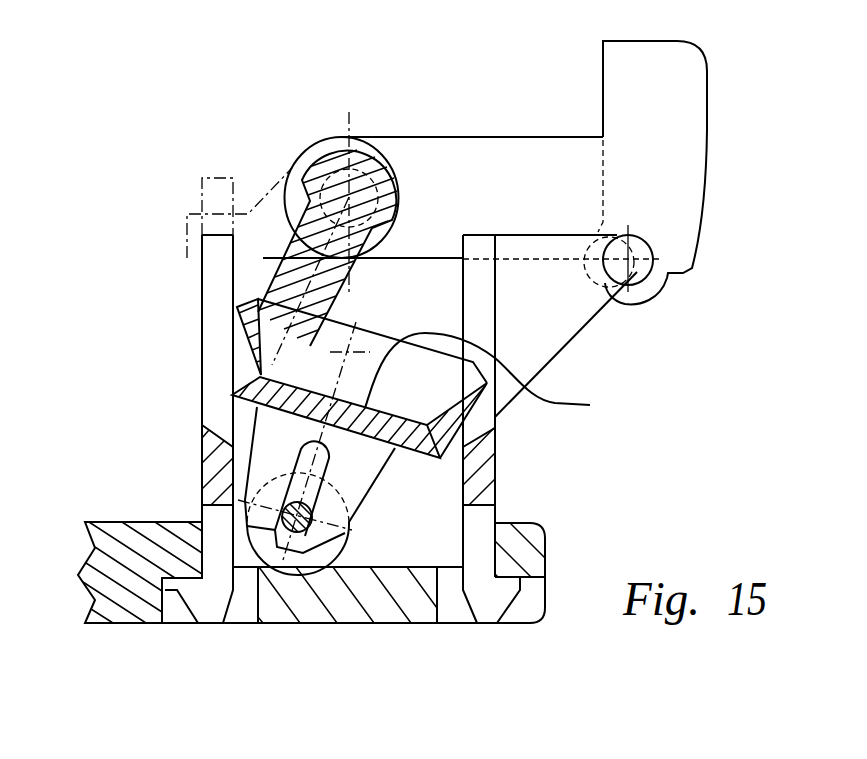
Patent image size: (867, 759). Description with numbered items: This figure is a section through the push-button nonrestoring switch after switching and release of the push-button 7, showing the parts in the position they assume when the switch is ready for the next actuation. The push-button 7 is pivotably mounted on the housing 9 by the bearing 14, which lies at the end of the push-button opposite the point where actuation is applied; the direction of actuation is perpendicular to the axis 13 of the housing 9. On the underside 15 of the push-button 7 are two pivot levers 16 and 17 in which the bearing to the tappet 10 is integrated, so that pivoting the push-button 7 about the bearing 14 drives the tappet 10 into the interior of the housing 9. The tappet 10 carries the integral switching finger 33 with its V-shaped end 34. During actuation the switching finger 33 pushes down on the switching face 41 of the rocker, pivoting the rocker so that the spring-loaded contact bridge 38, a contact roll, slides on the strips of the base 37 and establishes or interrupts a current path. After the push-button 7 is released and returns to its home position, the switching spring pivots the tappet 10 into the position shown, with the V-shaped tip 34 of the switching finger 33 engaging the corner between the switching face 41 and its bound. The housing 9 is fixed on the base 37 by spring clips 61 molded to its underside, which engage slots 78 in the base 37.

The push-button 7 is at (707, 113).
The housing 9 is at (498, 468).
The tappet 10 is at (403, 148).
The axis of housing 13 is at (348, 122).
The bearing 14 is at (634, 274).
The underside of push-button 15 is at (603, 86).
The pivot lever 16 is at (263, 258).
The pivot lever 17 is at (463, 137).
The switching finger 33 is at (268, 290).
The V-shaped end 34 is at (262, 372).
The base 37 is at (126, 522).
The contact bridge 38 is at (272, 563).
The switching face 41 is at (501, 346).
The spring clip 61 is at (493, 602).
The slot 78 is at (243, 606).